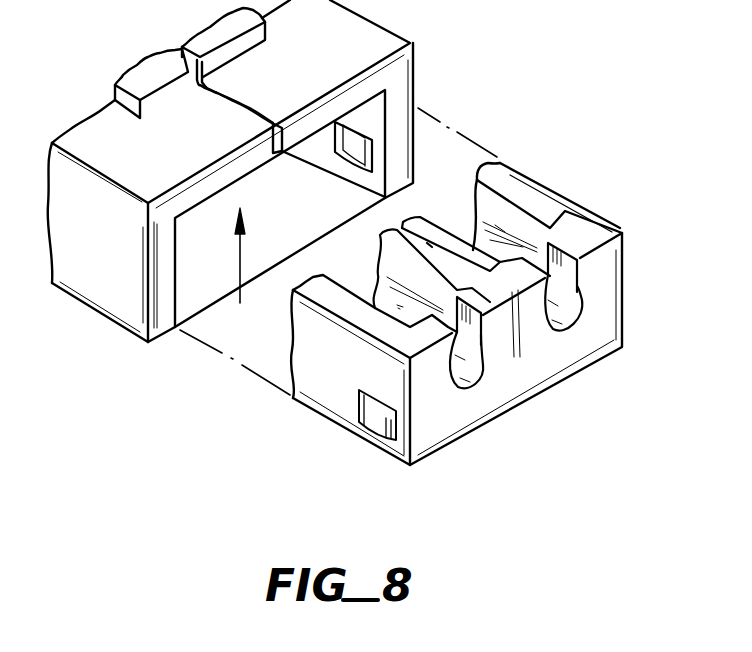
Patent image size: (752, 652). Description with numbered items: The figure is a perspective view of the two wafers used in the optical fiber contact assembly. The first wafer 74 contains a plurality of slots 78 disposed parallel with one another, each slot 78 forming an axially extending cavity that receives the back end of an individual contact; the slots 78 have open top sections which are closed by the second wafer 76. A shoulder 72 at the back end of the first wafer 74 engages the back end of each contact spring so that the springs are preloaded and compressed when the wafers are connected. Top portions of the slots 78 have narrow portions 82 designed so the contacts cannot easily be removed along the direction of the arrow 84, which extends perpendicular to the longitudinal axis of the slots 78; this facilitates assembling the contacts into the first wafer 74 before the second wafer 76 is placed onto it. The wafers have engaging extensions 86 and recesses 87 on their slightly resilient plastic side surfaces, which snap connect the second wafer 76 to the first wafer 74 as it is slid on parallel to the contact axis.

The shoulder 72 is at (465, 302).
The first wafer 74 is at (315, 382).
The second wafer 76 is at (128, 288).
The slots 78 is at (420, 287).
The narrow portions 82 is at (553, 250).
The arrow 84 is at (241, 256).
The engaging extensions 86 is at (380, 428).
The recesses 87 is at (357, 146).